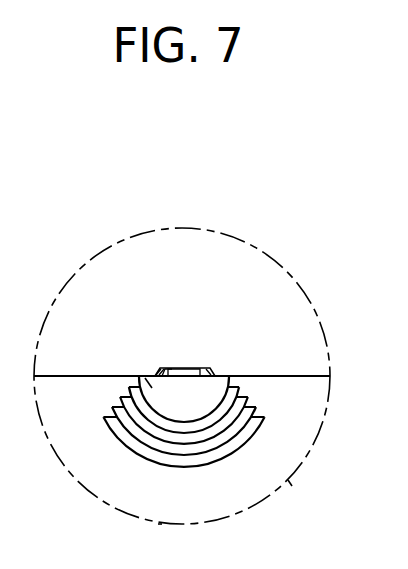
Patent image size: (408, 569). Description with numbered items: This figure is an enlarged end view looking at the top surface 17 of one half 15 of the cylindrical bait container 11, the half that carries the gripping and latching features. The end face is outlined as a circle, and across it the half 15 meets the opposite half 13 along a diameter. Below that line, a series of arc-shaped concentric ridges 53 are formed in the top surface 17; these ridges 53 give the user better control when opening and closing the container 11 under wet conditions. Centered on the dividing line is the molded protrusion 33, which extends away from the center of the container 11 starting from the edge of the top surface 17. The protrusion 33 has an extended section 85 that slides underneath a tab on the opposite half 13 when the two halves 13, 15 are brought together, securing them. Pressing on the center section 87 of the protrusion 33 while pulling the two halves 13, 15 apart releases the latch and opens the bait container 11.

The bait container 11 is at (282, 238).
The half 13 is at (125, 242).
The half 15 is at (159, 520).
The top surface 17 is at (278, 463).
The molded protrusion 33 is at (198, 369).
The concentric ridges 53 is at (213, 465).
The extended section 85 is at (164, 369).
The center section 87 is at (152, 388).